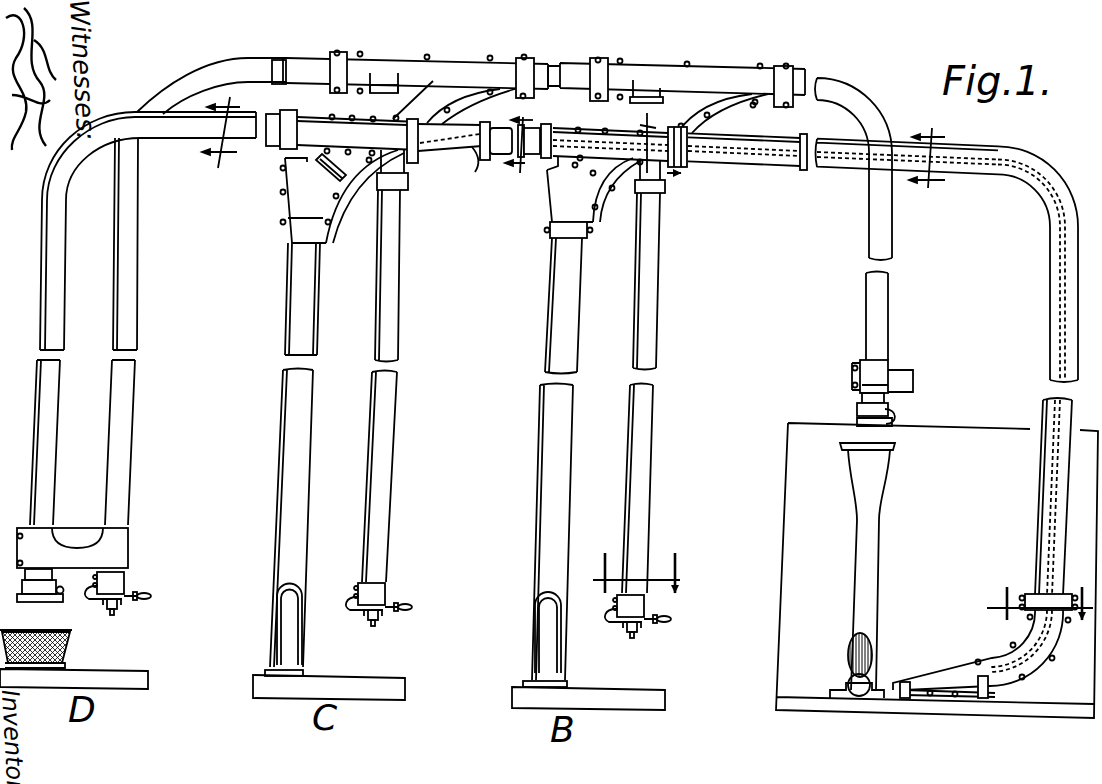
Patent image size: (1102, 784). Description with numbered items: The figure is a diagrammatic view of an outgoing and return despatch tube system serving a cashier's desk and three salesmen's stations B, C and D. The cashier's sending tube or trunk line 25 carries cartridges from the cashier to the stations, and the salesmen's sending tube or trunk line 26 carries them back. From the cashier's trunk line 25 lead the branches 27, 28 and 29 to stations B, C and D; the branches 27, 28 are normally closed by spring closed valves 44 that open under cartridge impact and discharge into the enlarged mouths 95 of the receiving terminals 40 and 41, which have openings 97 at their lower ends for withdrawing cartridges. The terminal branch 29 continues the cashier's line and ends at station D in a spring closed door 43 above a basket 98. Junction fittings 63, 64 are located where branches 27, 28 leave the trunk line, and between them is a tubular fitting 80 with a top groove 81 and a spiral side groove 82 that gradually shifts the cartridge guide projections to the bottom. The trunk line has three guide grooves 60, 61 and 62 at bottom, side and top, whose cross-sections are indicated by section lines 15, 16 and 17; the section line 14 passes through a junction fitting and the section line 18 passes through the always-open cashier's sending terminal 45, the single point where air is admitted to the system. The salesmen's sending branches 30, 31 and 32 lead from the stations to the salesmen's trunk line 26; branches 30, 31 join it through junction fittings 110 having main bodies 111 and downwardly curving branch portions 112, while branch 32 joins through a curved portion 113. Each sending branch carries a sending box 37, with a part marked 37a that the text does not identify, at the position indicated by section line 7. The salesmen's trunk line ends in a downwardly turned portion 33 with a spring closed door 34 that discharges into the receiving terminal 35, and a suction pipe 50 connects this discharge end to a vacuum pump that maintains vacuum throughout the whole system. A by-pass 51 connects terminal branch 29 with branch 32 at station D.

The section line 7— 7 is at (638, 573).
The section line 14— 14 is at (664, 148).
The section line 15— 15 is at (376, 137).
The section line 16— 16 is at (527, 109).
The section line 17— 17 is at (929, 162).
The section line 18— 18 is at (1043, 592).
The cashier's sending tube or trunk line 25 is at (832, 168).
The salesmen's sending tube or trunk line 26 is at (551, 72).
The branch 27 is at (542, 203).
The branch 28 is at (366, 169).
The terminal receiving branch 29 is at (44, 187).
The salesmen's sending branch 30 is at (657, 388).
The salesmen's sending branch 31 is at (400, 381).
The salesmen's sending branch 32 is at (137, 367).
The downwardly turned portion 33 is at (891, 342).
The spring closed door 34 is at (896, 434).
The receiving terminal 35 is at (885, 524).
The sending box 37 is at (135, 588).
The valve stem 37a is at (131, 604).
The receiving terminal 40 is at (542, 393).
The receiving terminal 41 is at (286, 368).
The spring closed door 43 is at (19, 586).
The spring closed valve 44 is at (321, 173).
The sending terminal or fitting 45 is at (1030, 671).
The suction pipe 50 is at (906, 374).
The by-pass 51 is at (72, 553).
The bottom guide groove 60 is at (1042, 473).
The side guide groove 61 is at (1052, 487).
The top guide groove 62 is at (1066, 508).
The junction fitting 63 is at (612, 127).
The junction fitting 64 is at (336, 118).
The tubular fitting 80 is at (461, 149).
The top groove 81 is at (450, 126).
The spiral side groove 82 is at (477, 172).
The enlarged upper end or mouth 95 is at (318, 207).
The opening 97 is at (287, 626).
The basket 98 is at (67, 647).
The junction fitting 110 is at (449, 62).
The main body 111 is at (386, 74).
The branch portion 112 is at (435, 103).
The curved portion 113 is at (183, 75).